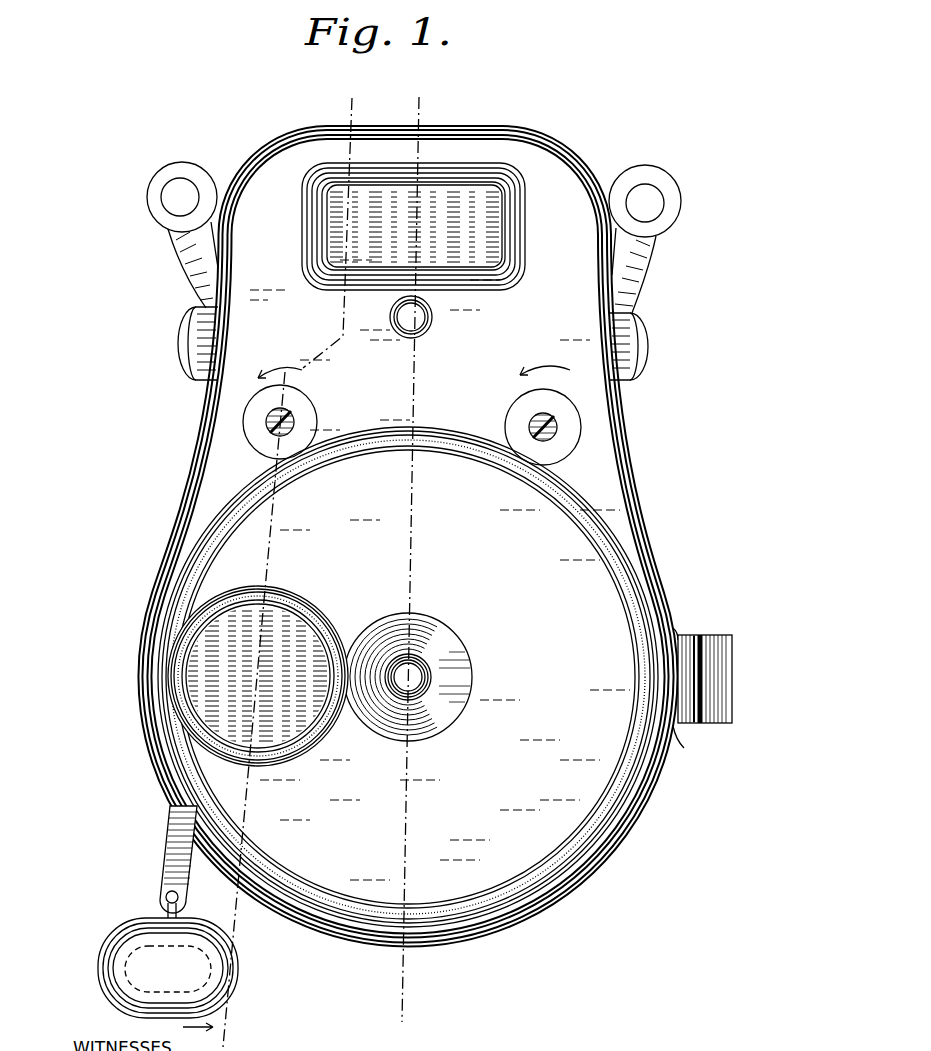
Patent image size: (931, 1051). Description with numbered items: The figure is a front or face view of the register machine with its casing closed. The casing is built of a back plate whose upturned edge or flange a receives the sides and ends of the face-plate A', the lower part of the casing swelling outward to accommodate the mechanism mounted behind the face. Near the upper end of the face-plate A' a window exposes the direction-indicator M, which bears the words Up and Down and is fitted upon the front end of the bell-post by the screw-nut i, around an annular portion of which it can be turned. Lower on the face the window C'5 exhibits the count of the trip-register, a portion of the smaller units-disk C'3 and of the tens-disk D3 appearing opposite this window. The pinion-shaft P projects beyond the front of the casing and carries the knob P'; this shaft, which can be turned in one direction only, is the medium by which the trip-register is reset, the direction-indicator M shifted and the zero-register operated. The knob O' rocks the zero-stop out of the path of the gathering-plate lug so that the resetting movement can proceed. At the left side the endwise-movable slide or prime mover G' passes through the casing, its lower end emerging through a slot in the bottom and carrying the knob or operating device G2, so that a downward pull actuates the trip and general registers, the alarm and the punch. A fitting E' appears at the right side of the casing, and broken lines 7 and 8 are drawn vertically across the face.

The upturned edge or flange a is at (300, 129).
The face-plate A' is at (440, 570).
The direction-indicator M is at (322, 238).
The pinion-shaft P is at (270, 420).
The knob P' is at (288, 422).
The knob O' is at (534, 427).
The tens-disk D3 is at (258, 676).
The units-disk C'3 is at (258, 676).
The window C'5 is at (258, 676).
The actuating-slide G' is at (169, 863).
The knob or operating device G2 is at (168, 968).
The side bracket E' is at (702, 688).
The screw-nut i is at (697, 725).
The section line 7- 7 is at (315, 106).
The section line 8- 8 is at (391, 1014).